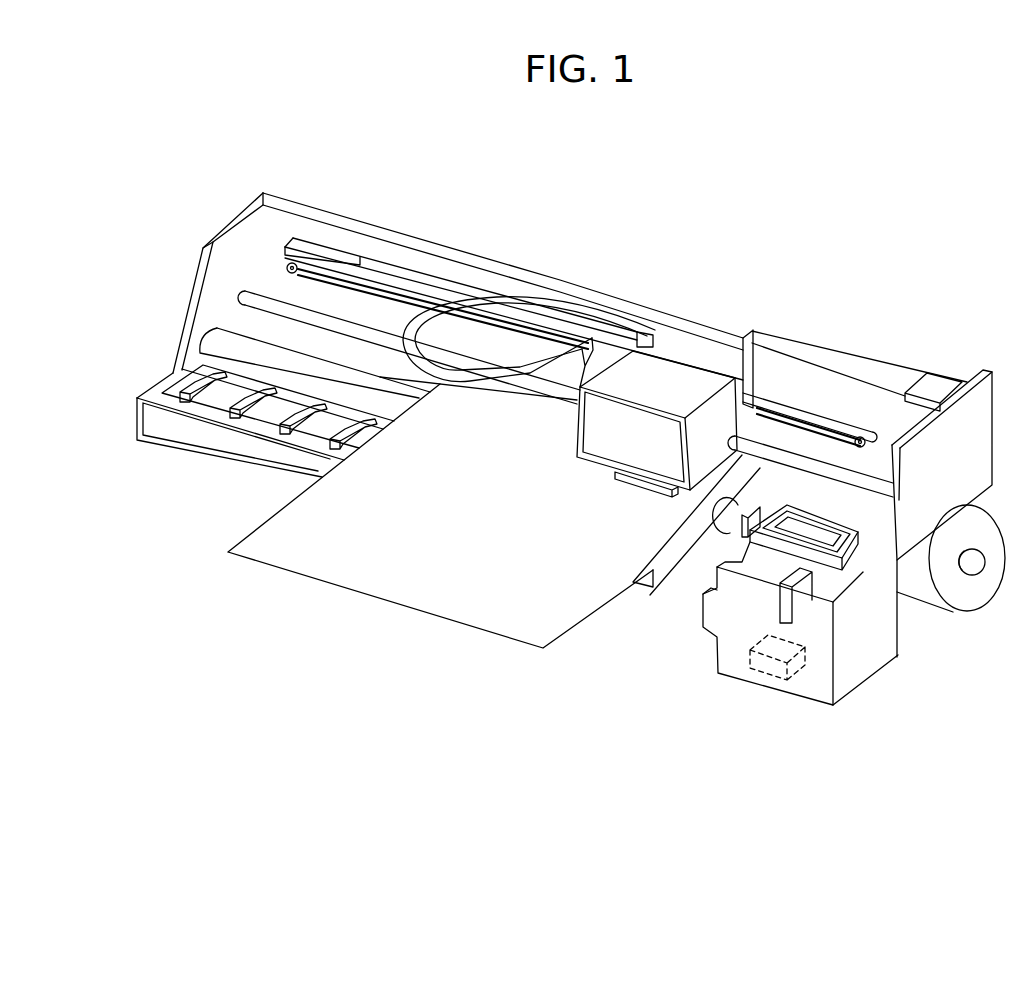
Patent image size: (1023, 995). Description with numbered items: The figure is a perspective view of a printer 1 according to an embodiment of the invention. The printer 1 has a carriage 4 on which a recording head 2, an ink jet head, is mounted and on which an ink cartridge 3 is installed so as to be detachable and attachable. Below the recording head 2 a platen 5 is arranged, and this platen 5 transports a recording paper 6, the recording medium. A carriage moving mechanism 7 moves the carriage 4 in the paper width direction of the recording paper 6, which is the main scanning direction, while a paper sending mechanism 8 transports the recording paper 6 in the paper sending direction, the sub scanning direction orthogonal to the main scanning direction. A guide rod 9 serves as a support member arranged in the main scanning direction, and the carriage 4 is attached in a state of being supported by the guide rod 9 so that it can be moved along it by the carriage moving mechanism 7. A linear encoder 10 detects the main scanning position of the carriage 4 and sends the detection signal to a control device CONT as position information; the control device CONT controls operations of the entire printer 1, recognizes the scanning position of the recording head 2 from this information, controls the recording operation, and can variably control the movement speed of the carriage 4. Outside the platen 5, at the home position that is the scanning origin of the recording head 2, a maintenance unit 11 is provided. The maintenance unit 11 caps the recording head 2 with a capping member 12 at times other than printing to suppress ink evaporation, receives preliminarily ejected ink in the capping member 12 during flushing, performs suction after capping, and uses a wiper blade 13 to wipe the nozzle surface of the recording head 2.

The printer 1 is at (473, 252).
The recording head 2 is at (630, 477).
The ink cartridge 3 is at (648, 373).
The carriage 4 is at (732, 400).
The platen 5 is at (212, 403).
The recording paper 6 is at (393, 578).
The carriage moving mechanism 7 is at (840, 411).
The paper sending mechanism 8 is at (910, 617).
The guide rod 9 is at (255, 295).
The linear encoder 10 is at (317, 250).
The maintenance unit 11 is at (840, 572).
The capping member 12 is at (773, 530).
The wiper blade 13 is at (743, 528).
The control device CONT is at (770, 680).